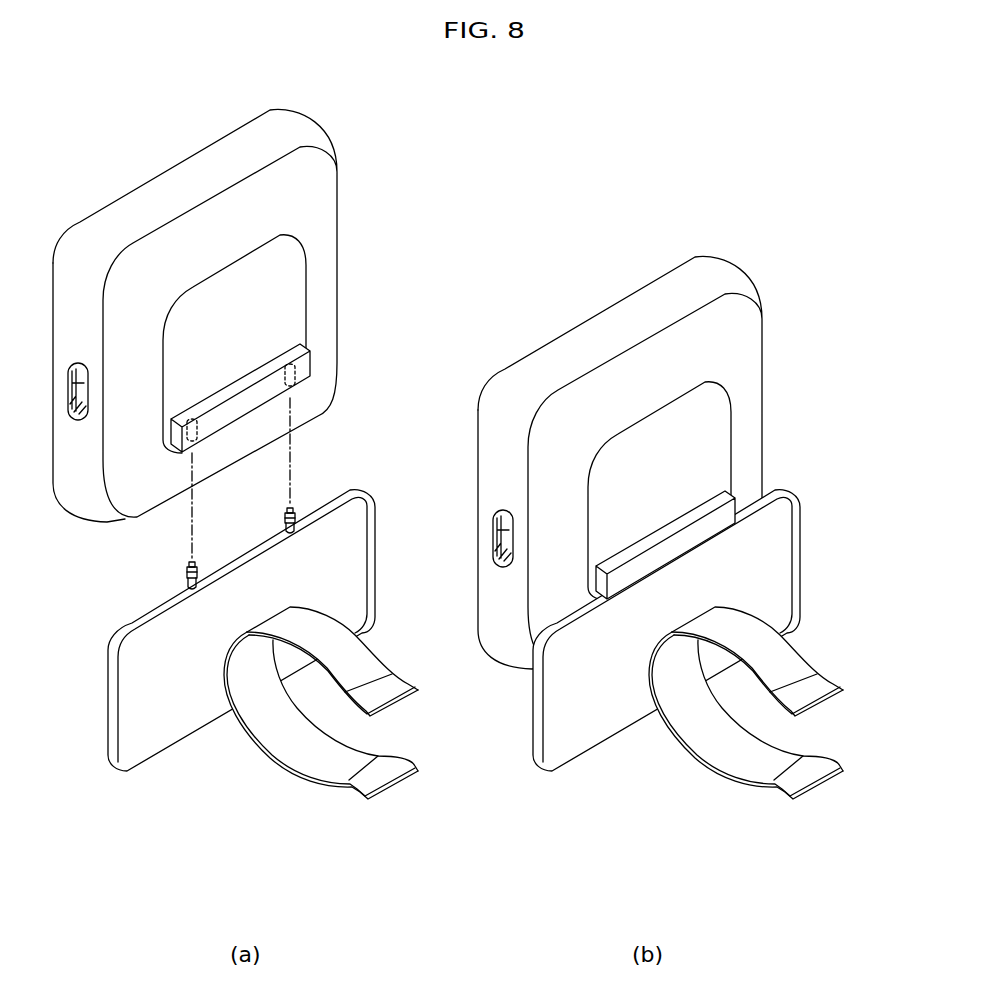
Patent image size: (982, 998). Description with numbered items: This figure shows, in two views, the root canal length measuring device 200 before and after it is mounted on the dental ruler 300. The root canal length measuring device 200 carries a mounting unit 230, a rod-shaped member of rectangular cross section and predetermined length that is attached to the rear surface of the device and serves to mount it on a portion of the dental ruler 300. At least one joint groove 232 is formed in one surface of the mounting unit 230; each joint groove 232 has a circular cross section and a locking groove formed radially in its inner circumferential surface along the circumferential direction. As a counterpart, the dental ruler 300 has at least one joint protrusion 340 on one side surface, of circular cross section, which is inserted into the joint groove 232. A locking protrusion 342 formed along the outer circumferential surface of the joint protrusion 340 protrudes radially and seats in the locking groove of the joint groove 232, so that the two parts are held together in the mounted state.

The root canal length measuring device 200 is at (294, 278).
The mounting unit 230 is at (307, 367).
The joint groove 232 is at (290, 374).
The dental ruler 300 is at (158, 737).
The joint protrusion 340 is at (187, 564).
The locking protrusion 342 is at (291, 507).